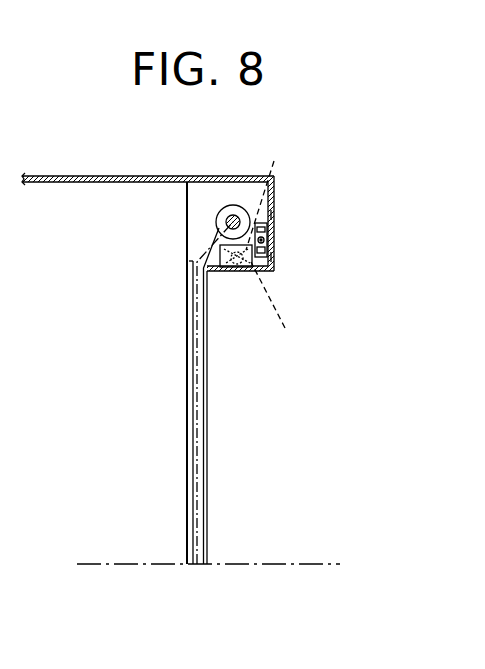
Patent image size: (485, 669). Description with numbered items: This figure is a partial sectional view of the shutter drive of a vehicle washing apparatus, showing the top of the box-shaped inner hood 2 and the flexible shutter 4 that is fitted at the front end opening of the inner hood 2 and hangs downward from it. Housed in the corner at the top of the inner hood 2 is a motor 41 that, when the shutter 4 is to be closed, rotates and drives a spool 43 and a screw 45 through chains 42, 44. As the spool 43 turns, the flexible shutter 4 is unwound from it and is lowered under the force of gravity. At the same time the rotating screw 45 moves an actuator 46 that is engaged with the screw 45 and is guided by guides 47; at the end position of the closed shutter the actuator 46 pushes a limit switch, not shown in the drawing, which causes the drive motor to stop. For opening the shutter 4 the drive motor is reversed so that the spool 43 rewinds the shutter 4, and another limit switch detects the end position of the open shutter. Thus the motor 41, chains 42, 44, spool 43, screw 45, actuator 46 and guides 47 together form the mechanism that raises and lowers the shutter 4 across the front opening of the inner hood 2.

The inner hood 2 is at (98, 176).
The shutter 4 is at (199, 474).
The motor 41 is at (232, 272).
The chain 42 is at (275, 195).
The spool 43 is at (233, 215).
The chain 44 is at (282, 306).
The screw 45 is at (270, 241).
The actuator 46 is at (268, 232).
The guides 47 is at (273, 215).